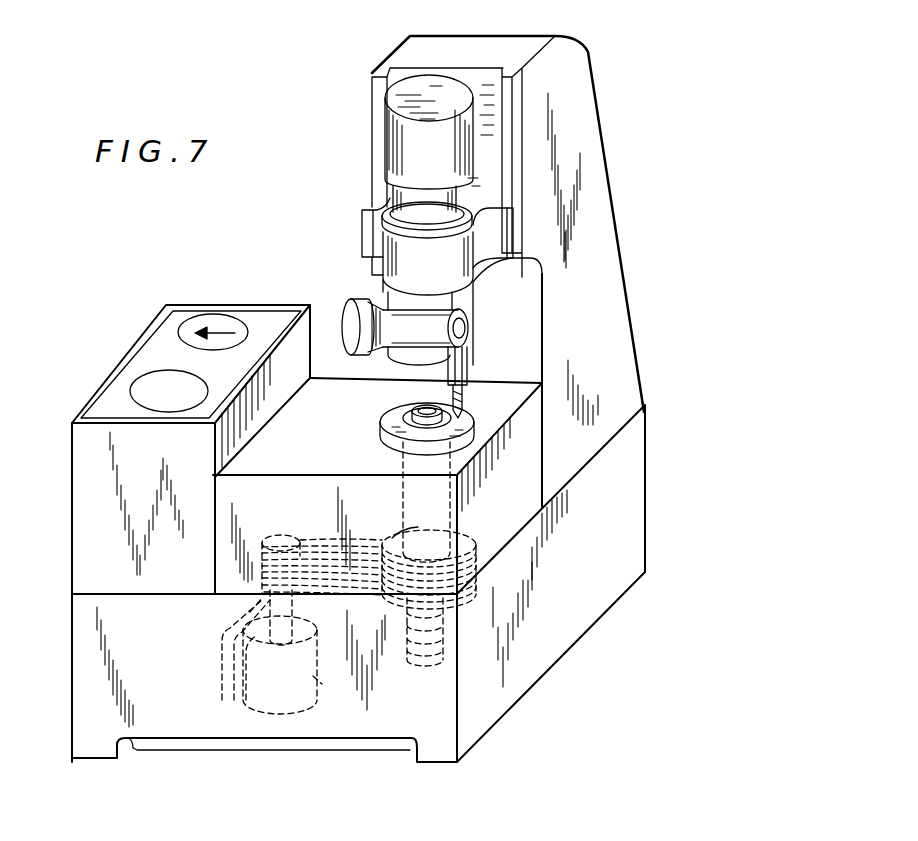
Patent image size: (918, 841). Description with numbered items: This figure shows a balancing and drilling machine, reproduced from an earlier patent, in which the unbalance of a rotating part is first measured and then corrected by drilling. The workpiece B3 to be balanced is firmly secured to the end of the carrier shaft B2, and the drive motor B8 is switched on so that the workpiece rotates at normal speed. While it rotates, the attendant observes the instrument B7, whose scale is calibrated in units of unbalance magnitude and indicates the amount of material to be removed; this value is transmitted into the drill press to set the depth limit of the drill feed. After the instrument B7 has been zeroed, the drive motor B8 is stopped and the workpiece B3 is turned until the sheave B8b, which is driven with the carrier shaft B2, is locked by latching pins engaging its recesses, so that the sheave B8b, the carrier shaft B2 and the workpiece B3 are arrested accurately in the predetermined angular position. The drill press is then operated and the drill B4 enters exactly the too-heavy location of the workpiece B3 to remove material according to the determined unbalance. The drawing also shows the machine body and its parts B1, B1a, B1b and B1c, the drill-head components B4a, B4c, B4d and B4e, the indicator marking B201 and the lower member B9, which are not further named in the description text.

The base frame B1 is at (584, 623).
The upper base table surface B1a is at (530, 455).
The base front lower portion B1b is at (73, 553).
The upright column B1c is at (600, 148).
The carrier shaft B2 is at (458, 507).
The workpiece B3 is at (465, 424).
The drill B4 is at (458, 402).
The drill head housing B4a is at (507, 95).
The feed cylinder B4c is at (470, 335).
The drive motor B4d is at (390, 140).
The feed knob B4e is at (370, 306).
The instrument B7 is at (167, 449).
The direction indicator B201 is at (261, 294).
The drive motor B8 is at (316, 683).
The sheave B8b is at (470, 560).
The drive shaft B9 is at (447, 633).